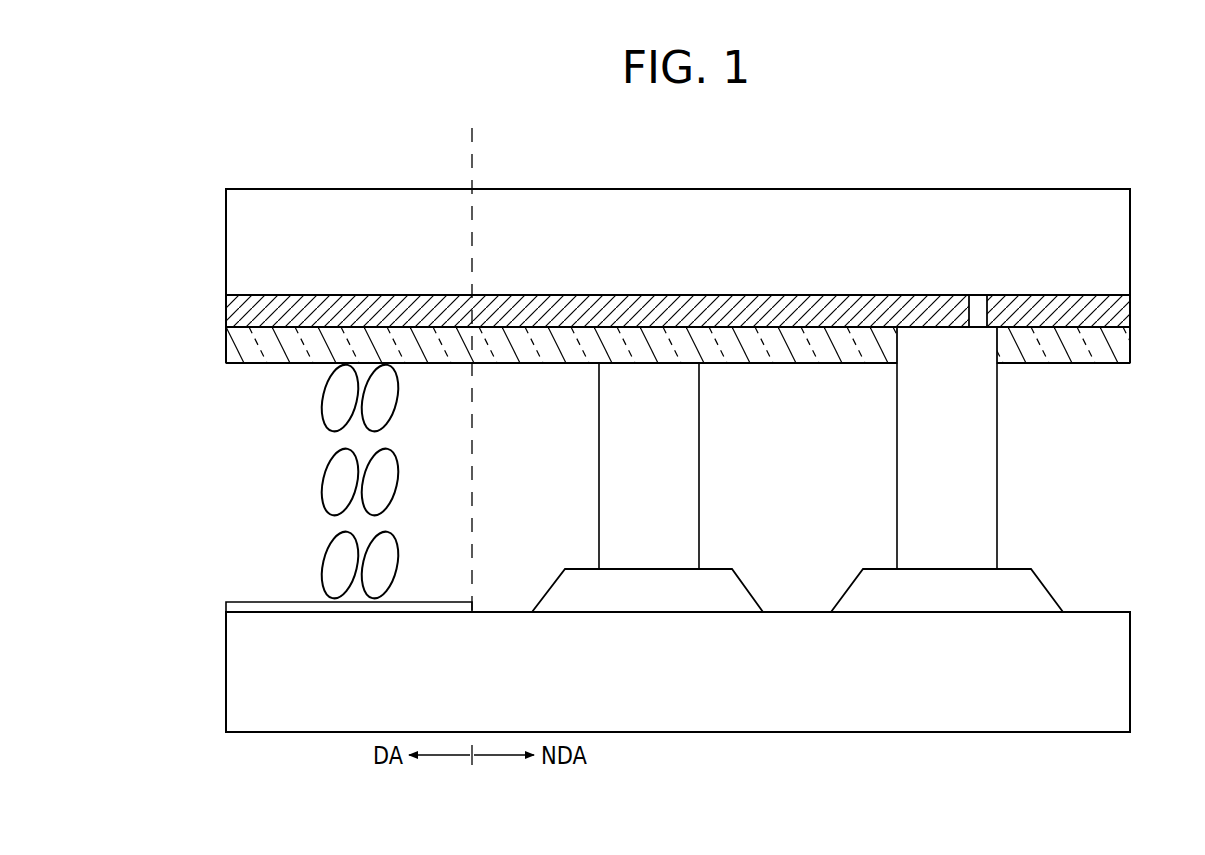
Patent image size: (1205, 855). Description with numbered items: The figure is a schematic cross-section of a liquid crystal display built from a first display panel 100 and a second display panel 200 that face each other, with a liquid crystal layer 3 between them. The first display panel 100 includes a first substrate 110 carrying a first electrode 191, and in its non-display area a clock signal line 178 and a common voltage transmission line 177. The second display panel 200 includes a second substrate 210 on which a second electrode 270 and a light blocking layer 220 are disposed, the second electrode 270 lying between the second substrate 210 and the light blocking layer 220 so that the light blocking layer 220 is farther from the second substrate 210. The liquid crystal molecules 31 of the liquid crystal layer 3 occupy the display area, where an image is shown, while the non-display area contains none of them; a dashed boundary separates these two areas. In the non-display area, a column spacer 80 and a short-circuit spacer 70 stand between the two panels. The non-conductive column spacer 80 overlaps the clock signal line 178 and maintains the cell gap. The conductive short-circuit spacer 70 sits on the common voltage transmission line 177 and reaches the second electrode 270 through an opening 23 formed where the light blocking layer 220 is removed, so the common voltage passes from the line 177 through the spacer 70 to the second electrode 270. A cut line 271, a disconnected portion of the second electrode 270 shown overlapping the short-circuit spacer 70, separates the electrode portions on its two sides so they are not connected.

The second display panel 200 is at (617, 256).
The second substrate 210 is at (250, 250).
The second electrode 270 is at (250, 311).
The cut line 271 is at (975, 322).
The light blocking layer 220 is at (645, 345).
The opening 23 is at (903, 333).
The short-circuit spacer 70 is at (975, 478).
The column spacer 80 is at (680, 478).
The clock signal line 178 is at (654, 598).
The common voltage transmission line 177 is at (946, 598).
The first display panel 100 is at (617, 662).
The first substrate 110 is at (250, 668).
The first electrode 191 is at (250, 603).
The liquid crystal layer 3 is at (287, 481).
The liquid crystal molecules 31 is at (340, 401).